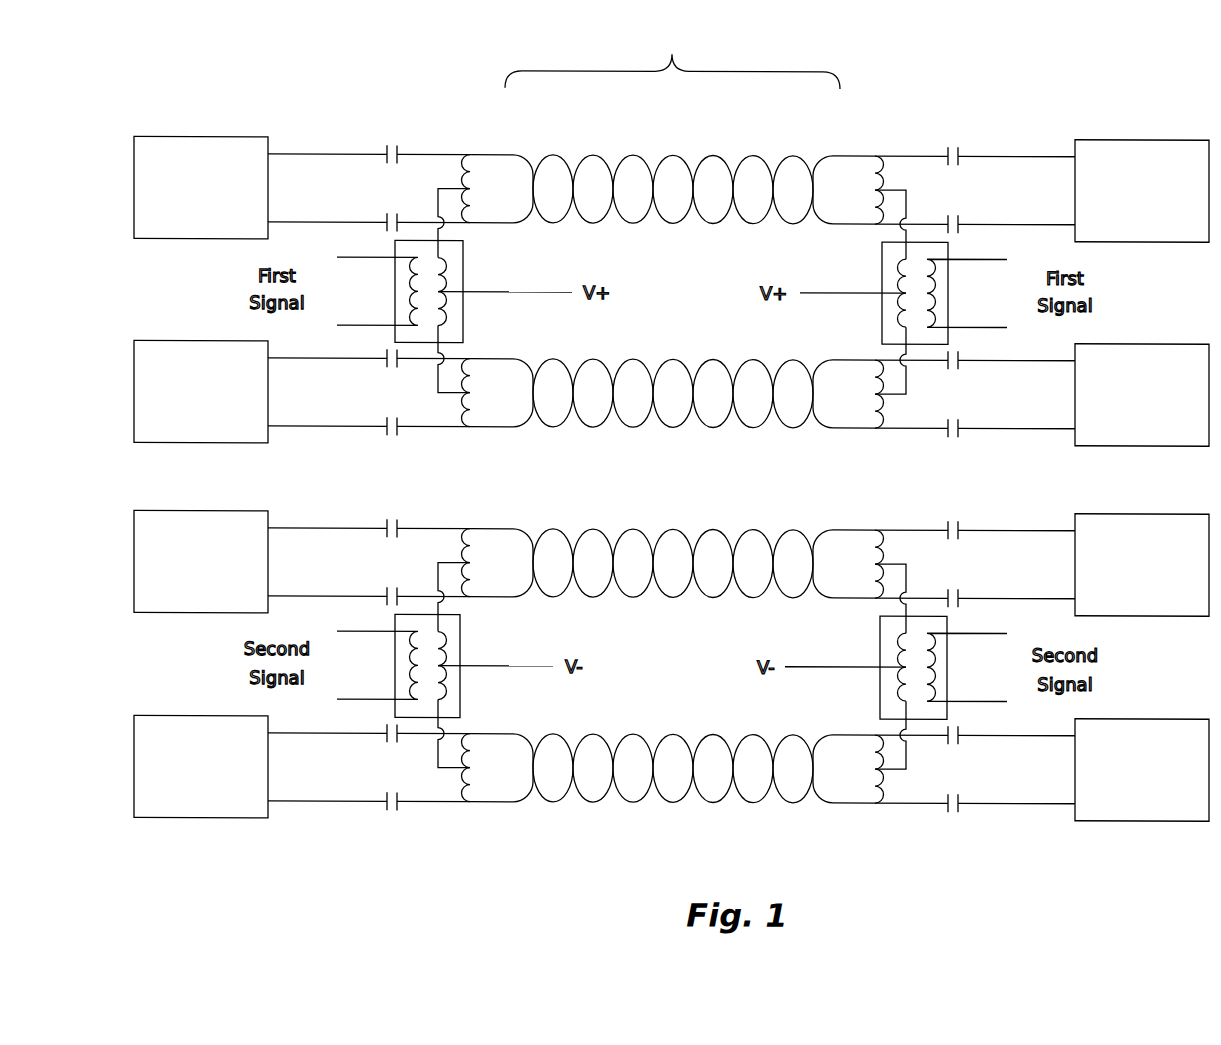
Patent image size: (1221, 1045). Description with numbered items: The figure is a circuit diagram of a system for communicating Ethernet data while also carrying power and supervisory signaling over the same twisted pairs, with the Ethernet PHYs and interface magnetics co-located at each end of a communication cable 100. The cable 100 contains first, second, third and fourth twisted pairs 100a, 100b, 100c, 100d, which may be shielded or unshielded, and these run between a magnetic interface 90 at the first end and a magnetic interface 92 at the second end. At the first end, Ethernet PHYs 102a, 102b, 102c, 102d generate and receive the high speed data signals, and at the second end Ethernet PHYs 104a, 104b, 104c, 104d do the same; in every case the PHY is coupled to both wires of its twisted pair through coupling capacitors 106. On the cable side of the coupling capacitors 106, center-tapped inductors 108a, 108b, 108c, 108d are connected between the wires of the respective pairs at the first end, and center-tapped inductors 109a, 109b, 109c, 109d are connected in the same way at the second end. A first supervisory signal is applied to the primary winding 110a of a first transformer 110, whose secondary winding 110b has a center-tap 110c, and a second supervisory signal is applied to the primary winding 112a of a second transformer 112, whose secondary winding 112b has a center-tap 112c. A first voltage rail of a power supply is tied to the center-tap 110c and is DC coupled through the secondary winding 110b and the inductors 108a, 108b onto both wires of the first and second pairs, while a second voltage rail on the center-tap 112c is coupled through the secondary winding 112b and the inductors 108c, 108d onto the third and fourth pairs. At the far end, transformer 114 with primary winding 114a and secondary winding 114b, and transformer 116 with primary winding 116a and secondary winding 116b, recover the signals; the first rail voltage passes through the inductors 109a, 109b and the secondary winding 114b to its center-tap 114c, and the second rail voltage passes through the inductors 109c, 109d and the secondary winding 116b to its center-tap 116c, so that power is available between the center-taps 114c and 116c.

The magnetic interface 90 is at (445, 106).
The magnetic interface 92 is at (900, 107).
The communication cable 100 is at (672, 58).
The first twisted pair 100a is at (593, 155).
The second twisted pair 100b is at (593, 359).
The third twisted pair 100c is at (593, 529).
The fourth twisted pair 100d is at (593, 734).
The Ethernet PHY 102a is at (179, 224).
The Ethernet PHY 102b is at (179, 428).
The Ethernet PHY 102c is at (179, 598).
The Ethernet PHY 102d is at (179, 803).
The Ethernet PHY 104a is at (1120, 224).
The Ethernet PHY 104b is at (1120, 428).
The Ethernet PHY 104c is at (1120, 598).
The Ethernet PHY 104d is at (1120, 803).
The coupling capacitors 106 is at (388, 154).
The center-tapped inductor 108a is at (478, 155).
The center-tapped inductor 108b is at (478, 359).
The center-tapped inductor 108c is at (478, 529).
The center-tapped inductor 108d is at (478, 734).
The center-tapped inductor 109a is at (862, 157).
The center-tapped inductor 109b is at (862, 360).
The center-tapped inductor 109c is at (862, 531).
The center-tapped inductor 109d is at (862, 736).
The first transformer 110 is at (463, 258).
The primary winding 110a is at (408, 285).
The secondary winding 110b is at (450, 280).
The center-tap 110c is at (488, 291).
The second transformer 112 is at (463, 632).
The primary winding 112a is at (408, 660).
The secondary winding 112b is at (450, 652).
The center-tap 112c is at (487, 665).
The transformer 114 is at (882, 258).
The primary winding 114a is at (935, 290).
The secondary winding 114b is at (895, 280).
The center-tap 114c is at (862, 292).
The transformer 116 is at (882, 633).
The primary winding 116a is at (935, 662).
The secondary winding 116b is at (895, 655).
The center-tap 116c is at (862, 666).